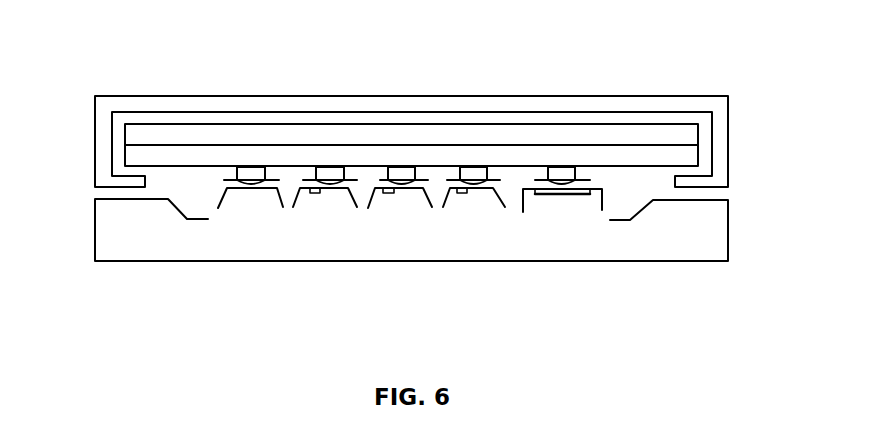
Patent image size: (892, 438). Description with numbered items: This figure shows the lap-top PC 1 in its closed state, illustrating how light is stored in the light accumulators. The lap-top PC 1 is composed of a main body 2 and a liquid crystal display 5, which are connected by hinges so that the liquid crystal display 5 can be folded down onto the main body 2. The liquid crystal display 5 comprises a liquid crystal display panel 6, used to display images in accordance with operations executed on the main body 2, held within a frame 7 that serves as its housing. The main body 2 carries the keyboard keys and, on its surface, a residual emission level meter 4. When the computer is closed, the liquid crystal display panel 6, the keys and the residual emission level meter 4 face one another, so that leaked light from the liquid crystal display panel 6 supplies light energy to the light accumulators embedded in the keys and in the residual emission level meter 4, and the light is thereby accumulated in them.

The lap-top PC 1 is at (382, 82).
The main body 2 is at (198, 274).
The residual emission level meter 4 is at (562, 205).
The liquid crystal display 5 is at (489, 92).
The liquid crystal display panel 6 is at (533, 137).
The frame 7 is at (660, 100).